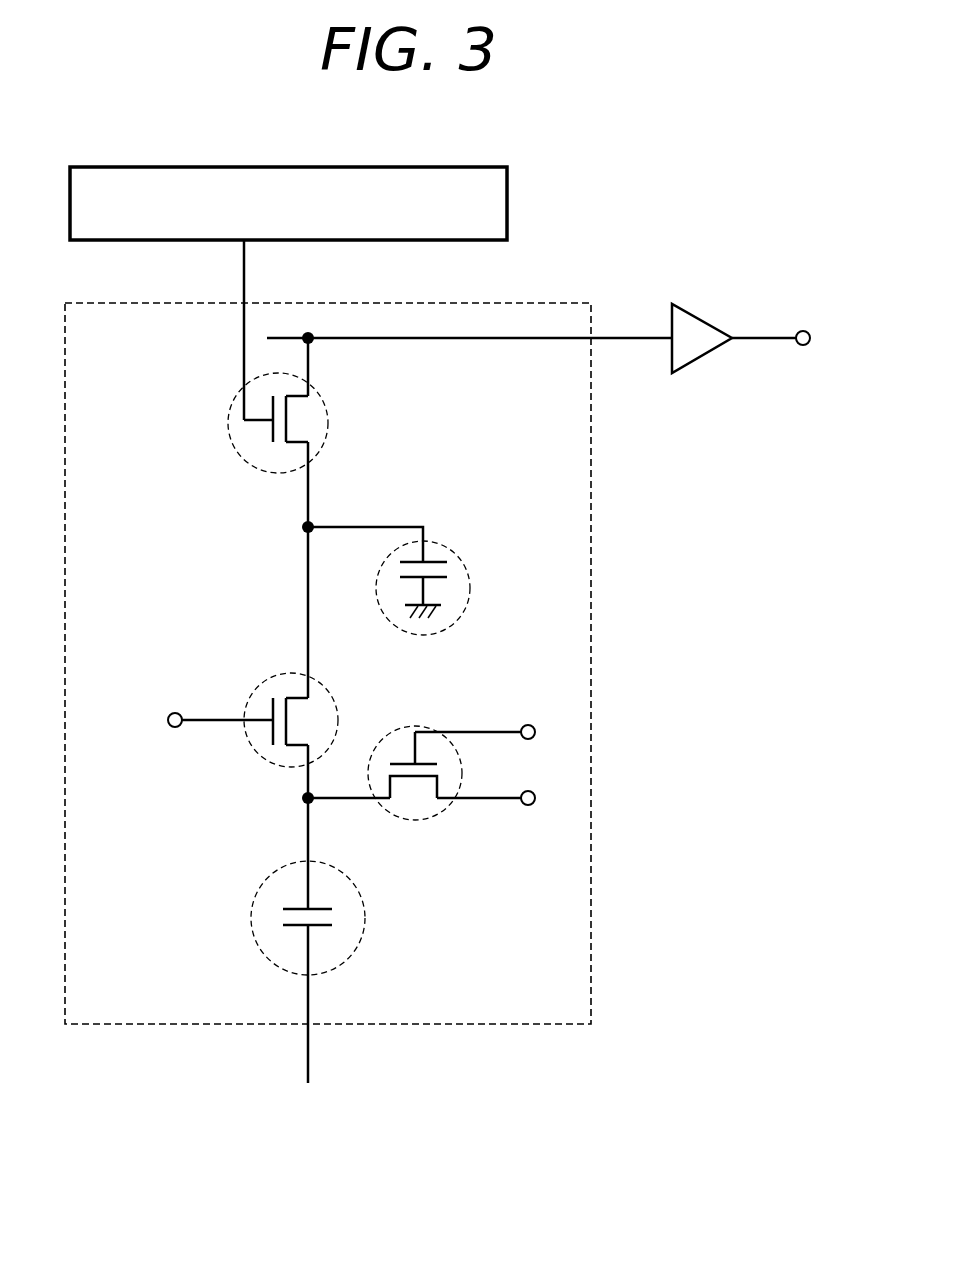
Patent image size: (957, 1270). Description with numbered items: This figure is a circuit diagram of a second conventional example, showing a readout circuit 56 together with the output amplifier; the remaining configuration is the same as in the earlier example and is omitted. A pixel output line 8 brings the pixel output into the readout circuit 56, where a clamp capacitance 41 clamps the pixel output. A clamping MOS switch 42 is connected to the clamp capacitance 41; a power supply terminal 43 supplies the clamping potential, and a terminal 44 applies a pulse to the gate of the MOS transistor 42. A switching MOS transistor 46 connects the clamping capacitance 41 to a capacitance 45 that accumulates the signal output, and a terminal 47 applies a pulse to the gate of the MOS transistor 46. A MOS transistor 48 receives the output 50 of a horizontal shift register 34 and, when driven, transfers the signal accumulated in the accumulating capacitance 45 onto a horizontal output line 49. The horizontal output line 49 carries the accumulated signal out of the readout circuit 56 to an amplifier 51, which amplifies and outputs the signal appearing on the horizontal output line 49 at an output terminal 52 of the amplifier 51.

The horizontal shift register 34 is at (507, 195).
The output of the horizontal shift register 50 is at (245, 283).
The readout circuit 56 is at (592, 594).
The MOS transistor 48 is at (329, 427).
The horizontal output line 49 is at (507, 341).
The amplifier 51 is at (697, 358).
The output terminal 52 is at (803, 346).
The capacitance for accumulating a signal output 45 is at (470, 603).
The switching MOS transistor 46 is at (278, 674).
The terminal 47 is at (175, 712).
The clamping MOS switch 42 is at (393, 728).
The terminal 44 is at (528, 724).
The power supply terminal 43 is at (528, 806).
The clamp capacitance 41 is at (251, 930).
The pixel output line 8 is at (309, 1057).